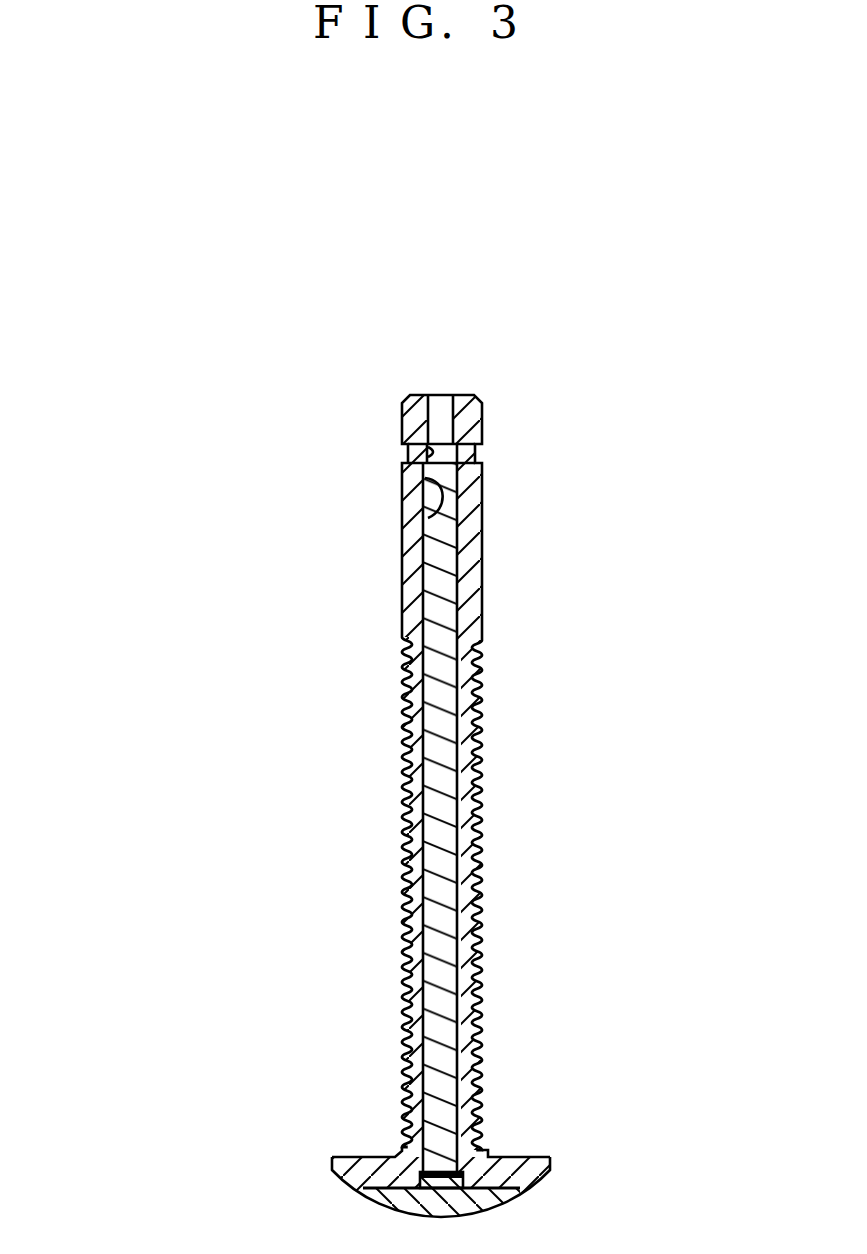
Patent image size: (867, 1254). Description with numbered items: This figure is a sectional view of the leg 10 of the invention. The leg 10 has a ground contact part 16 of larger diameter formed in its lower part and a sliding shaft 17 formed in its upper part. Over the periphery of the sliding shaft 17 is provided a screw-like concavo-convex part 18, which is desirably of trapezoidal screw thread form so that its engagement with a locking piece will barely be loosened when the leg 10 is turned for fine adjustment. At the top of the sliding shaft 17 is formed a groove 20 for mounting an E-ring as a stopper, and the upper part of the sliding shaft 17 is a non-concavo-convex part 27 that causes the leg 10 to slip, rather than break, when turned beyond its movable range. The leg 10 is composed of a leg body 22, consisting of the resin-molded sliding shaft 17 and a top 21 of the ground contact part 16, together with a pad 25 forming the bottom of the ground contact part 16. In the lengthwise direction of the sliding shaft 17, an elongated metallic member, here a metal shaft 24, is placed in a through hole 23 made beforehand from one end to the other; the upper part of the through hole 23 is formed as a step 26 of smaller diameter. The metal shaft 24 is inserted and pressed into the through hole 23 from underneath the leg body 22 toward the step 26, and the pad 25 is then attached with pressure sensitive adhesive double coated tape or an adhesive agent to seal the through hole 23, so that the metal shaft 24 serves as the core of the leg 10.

The leg 10 is at (142, 1200).
The ground contact part 16 is at (293, 1174).
The sliding shaft 17 is at (318, 730).
The concavo-convex part 18 is at (482, 757).
The groove 20 is at (482, 452).
The top 21 is at (550, 1158).
The leg body 22 is at (675, 1182).
The through hole 23 is at (430, 516).
The metal shaft 24 is at (483, 597).
The pad 25 is at (465, 1187).
The step 26 is at (404, 464).
The non-concavo-convex part 27 is at (483, 537).